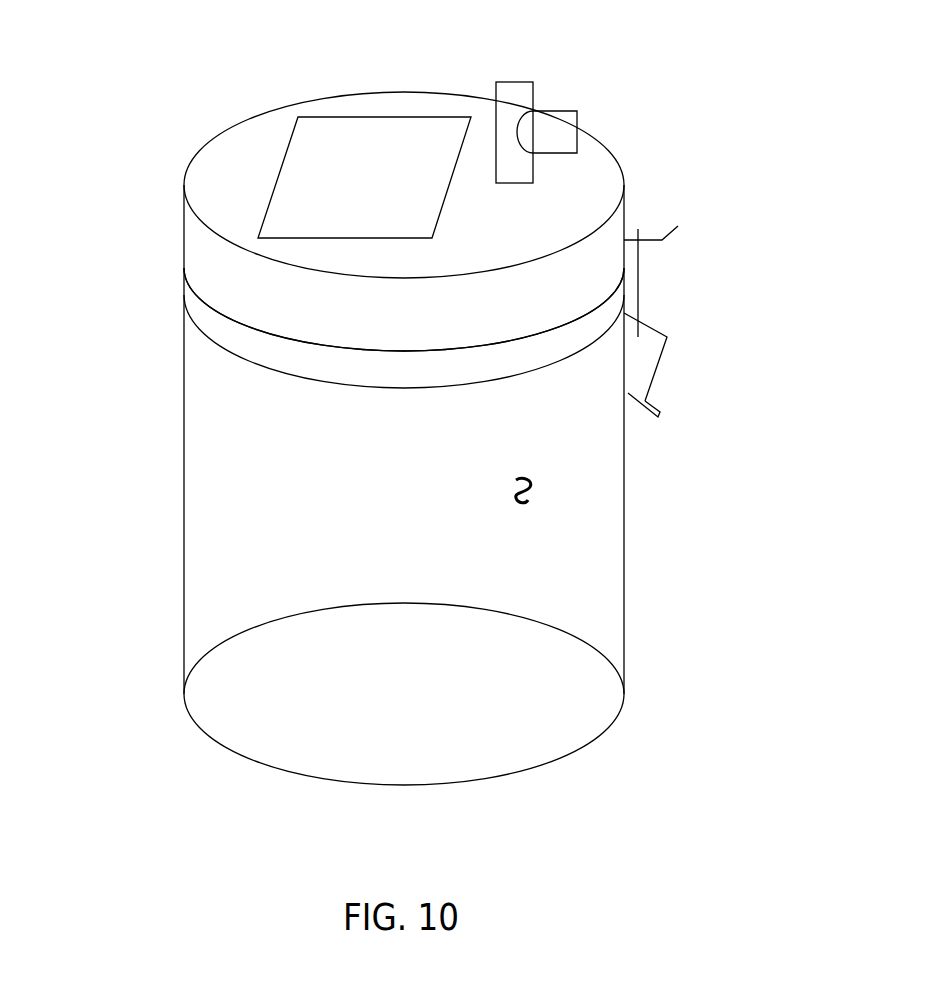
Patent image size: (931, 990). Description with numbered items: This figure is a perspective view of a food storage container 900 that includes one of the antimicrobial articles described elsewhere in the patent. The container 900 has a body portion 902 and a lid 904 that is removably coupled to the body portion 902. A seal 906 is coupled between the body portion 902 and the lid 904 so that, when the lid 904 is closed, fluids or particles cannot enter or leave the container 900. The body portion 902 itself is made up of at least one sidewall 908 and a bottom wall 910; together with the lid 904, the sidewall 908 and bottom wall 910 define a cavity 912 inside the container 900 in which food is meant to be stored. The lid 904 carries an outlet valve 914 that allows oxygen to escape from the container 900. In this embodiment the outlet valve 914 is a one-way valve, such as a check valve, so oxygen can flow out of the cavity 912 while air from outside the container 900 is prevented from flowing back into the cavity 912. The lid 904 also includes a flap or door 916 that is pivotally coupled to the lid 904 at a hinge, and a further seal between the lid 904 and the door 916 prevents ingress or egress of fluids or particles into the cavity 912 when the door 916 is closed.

The food storage container 900 is at (133, 88).
The body portion 902 is at (624, 582).
The lid 904 is at (205, 185).
The seal 906 is at (212, 323).
The sidewall 908 is at (217, 458).
The bottom wall 910 is at (530, 743).
The cavity 912 is at (535, 493).
The outlet valve 914 is at (525, 82).
The door 916 is at (355, 147).